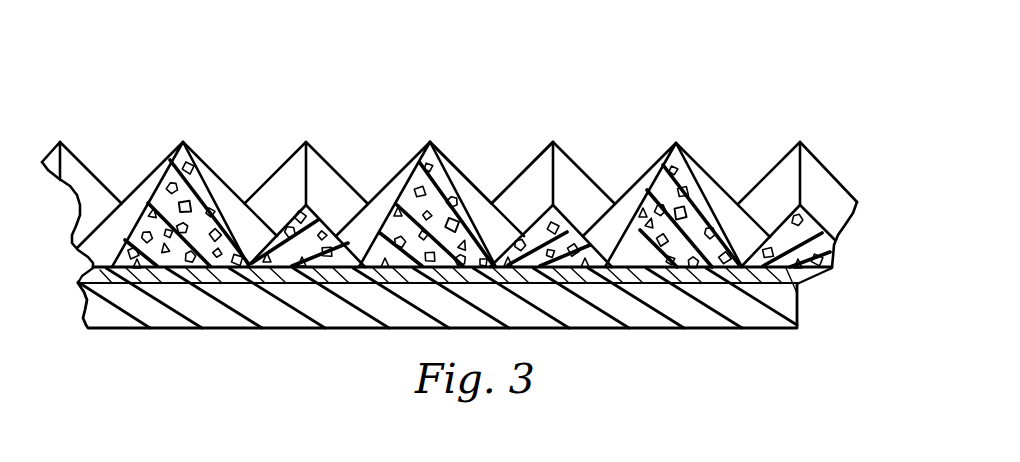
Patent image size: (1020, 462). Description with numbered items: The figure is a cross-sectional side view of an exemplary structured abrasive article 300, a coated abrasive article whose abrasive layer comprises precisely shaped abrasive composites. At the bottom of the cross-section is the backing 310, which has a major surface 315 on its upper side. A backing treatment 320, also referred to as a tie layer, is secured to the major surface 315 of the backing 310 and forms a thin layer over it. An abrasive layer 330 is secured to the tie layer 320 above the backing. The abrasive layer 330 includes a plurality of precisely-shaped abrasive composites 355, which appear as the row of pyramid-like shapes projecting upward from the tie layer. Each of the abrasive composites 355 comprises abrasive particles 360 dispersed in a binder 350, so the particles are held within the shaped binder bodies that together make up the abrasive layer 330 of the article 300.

The structured abrasive article 300 is at (683, 113).
The backing 310 is at (801, 319).
The major surface 315 is at (816, 284).
The backing treatment 320 is at (837, 270).
The abrasive layer 330 is at (855, 192).
The binder 350 is at (413, 172).
The precisely-shaped abrasive composites 355 is at (470, 178).
The abrasive particles 360 is at (717, 231).